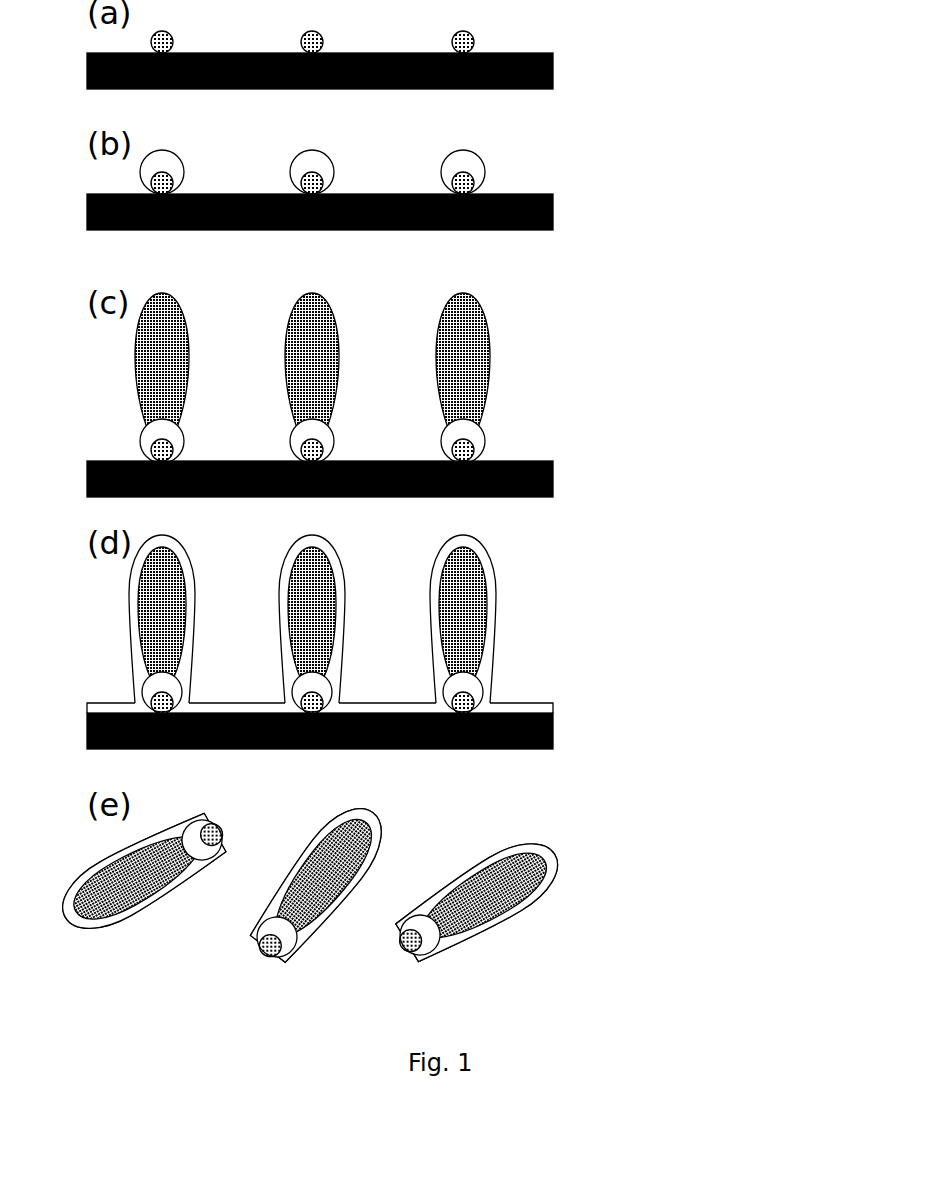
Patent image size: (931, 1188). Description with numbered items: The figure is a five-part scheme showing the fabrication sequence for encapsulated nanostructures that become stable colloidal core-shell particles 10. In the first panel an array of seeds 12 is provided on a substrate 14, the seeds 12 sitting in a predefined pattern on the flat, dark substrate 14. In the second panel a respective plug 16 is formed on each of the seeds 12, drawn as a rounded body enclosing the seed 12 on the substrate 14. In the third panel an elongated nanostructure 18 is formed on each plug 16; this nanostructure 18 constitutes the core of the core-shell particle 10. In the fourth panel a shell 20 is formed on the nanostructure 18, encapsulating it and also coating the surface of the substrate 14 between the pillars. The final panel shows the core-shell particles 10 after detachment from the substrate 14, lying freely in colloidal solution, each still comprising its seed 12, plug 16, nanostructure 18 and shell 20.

The core-shell particle 10 is at (123, 928).
The seed 12 is at (169, 37).
The substrate 14 is at (553, 70).
The plug 16 is at (157, 163).
The nanostructure 18 is at (165, 323).
The shell 20 is at (182, 565).